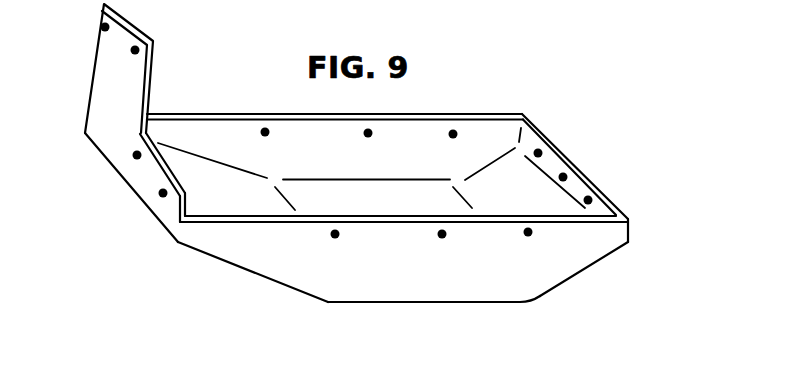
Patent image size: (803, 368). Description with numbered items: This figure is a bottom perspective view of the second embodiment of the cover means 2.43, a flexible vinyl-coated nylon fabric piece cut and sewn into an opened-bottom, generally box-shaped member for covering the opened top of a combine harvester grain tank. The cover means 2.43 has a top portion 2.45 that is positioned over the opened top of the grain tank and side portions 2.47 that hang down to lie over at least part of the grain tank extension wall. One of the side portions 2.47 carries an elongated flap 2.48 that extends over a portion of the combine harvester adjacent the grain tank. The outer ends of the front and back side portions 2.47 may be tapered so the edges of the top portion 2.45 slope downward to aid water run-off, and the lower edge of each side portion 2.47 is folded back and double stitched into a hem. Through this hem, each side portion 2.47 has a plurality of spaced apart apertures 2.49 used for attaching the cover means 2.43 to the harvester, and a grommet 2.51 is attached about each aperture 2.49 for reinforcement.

The cover means 2.43 is at (414, 292).
The top portion 2.45 is at (347, 303).
The side portions 2.47 is at (140, 185).
The elongated flap 2.48 is at (108, 70).
The apertures 2.49 is at (105, 27).
The grommet 2.51 is at (136, 49).